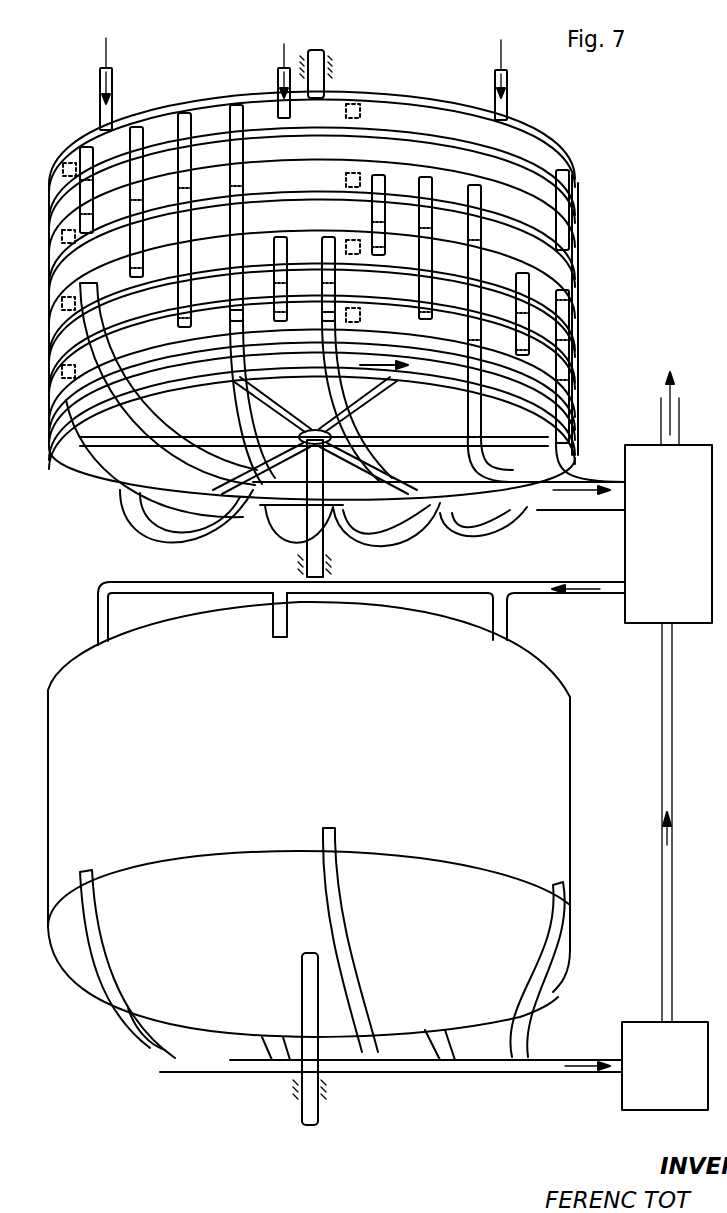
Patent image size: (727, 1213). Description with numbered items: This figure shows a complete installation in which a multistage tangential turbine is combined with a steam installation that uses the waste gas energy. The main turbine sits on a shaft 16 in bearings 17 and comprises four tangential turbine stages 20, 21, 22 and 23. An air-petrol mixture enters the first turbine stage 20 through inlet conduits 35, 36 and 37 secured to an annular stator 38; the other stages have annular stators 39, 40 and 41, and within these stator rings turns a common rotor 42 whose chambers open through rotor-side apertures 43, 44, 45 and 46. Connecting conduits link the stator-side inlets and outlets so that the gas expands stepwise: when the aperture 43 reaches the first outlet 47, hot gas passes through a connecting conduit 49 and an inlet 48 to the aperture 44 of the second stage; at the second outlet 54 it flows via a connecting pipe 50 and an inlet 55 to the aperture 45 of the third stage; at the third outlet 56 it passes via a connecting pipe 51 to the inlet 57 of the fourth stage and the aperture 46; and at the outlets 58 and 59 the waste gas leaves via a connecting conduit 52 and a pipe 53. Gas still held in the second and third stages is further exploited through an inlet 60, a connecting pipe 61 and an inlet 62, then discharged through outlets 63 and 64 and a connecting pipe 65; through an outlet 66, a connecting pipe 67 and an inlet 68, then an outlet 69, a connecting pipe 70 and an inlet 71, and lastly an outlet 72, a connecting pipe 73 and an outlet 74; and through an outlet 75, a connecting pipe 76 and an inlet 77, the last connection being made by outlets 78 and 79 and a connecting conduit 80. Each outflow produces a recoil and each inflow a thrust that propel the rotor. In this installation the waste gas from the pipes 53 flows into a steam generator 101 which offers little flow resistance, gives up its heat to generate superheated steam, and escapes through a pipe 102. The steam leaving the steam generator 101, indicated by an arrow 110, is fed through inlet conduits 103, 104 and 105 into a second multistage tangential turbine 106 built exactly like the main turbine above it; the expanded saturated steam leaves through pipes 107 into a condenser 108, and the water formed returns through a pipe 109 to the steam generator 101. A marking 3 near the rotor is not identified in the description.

The rotation direction arrow 3 is at (365, 366).
The shaft 16 is at (325, 50).
The bearings 17 is at (334, 66).
The first tangential turbine stage 20 is at (40, 200).
The second tangential turbine stage 21 is at (40, 268).
The third tangential turbine stage 22 is at (40, 338).
The fourth tangential turbine stage 23 is at (40, 404).
The inlet conduit 35 is at (509, 90).
The inlet conduit 36 is at (276, 74).
The inlet conduit 37 is at (114, 92).
The annular stator 38 is at (312, 159).
The annular stator 39 is at (312, 230).
The annular stator 40 is at (579, 326).
The annular stator 41 is at (578, 405).
The rotor 42 is at (312, 181).
The rotor-side aperture 43 is at (64, 160).
The rotor-side aperture 44 is at (62, 242).
The rotor-side aperture 45 is at (57, 311).
The rotor-side aperture 46 is at (57, 378).
The first outlet 47 is at (94, 156).
The inlet 48 is at (94, 214).
The connecting conduit 49 is at (94, 182).
The connecting pipe 50 is at (144, 202).
The connecting pipe 51 is at (192, 188).
The connecting conduit 52 is at (251, 182).
The pipe 53 is at (118, 416).
The second outlet 54 is at (144, 134).
The inlet 55 is at (144, 265).
The third outlet 56 is at (192, 124).
The inlet 57 is at (178, 323).
The outlet 58 is at (251, 208).
The outlet 59 is at (230, 320).
The inlet 60 is at (265, 279).
The connecting pipe 61 is at (274, 285).
The inlet 62 is at (274, 318).
The outlet 63 is at (316, 279).
The outlet 64 is at (322, 318).
The connecting pipe 65 is at (322, 286).
The outlet 66 is at (386, 184).
The connecting pipe 67 is at (393, 223).
The inlet 68 is at (386, 250).
The outlet 69 is at (441, 246).
The connecting pipe 70 is at (441, 227).
The inlet 71 is at (433, 323).
The outlet 72 is at (482, 205).
The connecting pipe 73 is at (482, 242).
The outlet 74 is at (482, 341).
The outlet 75 is at (530, 290).
The connecting pipe 76 is at (516, 314).
The inlet 77 is at (530, 355).
The outlet 78 is at (570, 300).
The outlet 79 is at (570, 376).
The connecting conduit 80 is at (570, 348).
The steam generator 101 is at (638, 527).
The pipe 102 is at (681, 412).
The inlet conduit 103 is at (509, 610).
The inlet conduit 104 is at (289, 622).
The inlet conduit 105 is at (109, 604).
The second multistage tangential turbine 106 is at (75, 670).
The pipes 107 is at (530, 970).
The condenser 108 is at (632, 1035).
The pipe 109 is at (661, 848).
The arrow 110 is at (583, 586).